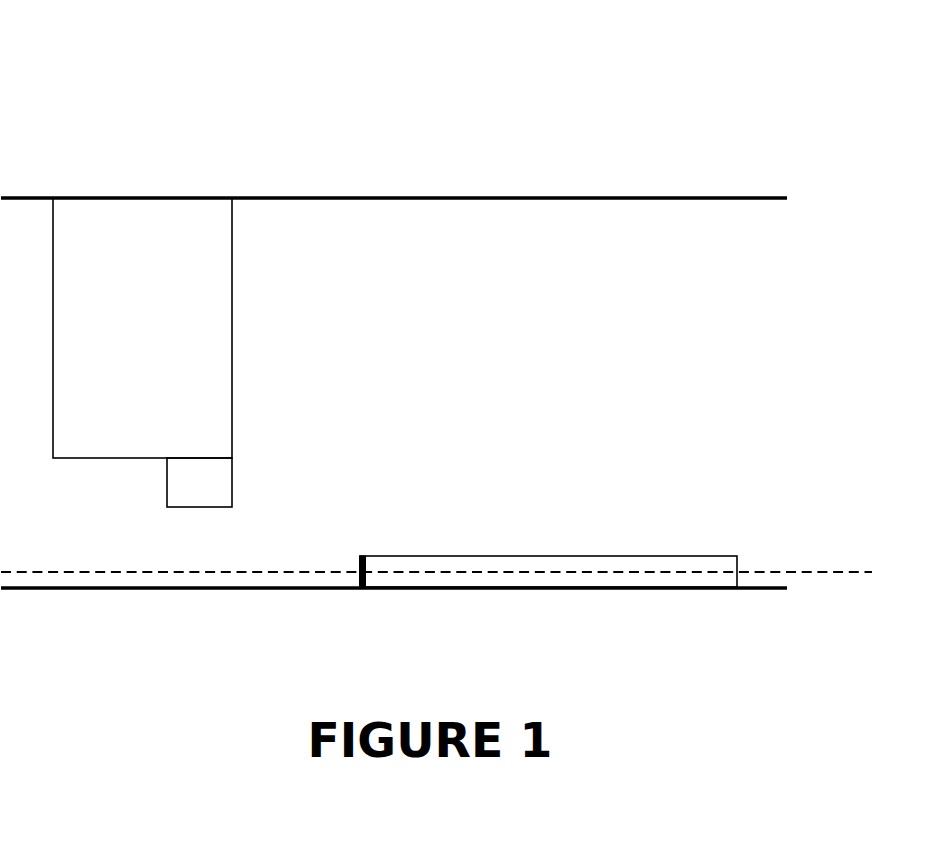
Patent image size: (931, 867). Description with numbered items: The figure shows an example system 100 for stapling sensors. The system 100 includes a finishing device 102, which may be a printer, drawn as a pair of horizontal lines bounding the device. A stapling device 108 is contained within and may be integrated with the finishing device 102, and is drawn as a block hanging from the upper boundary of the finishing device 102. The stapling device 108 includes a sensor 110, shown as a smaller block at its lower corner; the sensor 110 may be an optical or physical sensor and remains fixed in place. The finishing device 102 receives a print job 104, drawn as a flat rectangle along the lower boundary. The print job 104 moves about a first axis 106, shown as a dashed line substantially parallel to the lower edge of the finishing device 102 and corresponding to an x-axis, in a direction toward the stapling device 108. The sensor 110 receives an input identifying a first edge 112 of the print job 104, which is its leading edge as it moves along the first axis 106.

The system 100 is at (150, 124).
The finishing device 102 is at (518, 197).
The print job 104 is at (548, 555).
The first axis 106 is at (790, 571).
The stapling device 108 is at (232, 322).
The sensor 110 is at (232, 478).
The first edge 112 is at (362, 555).